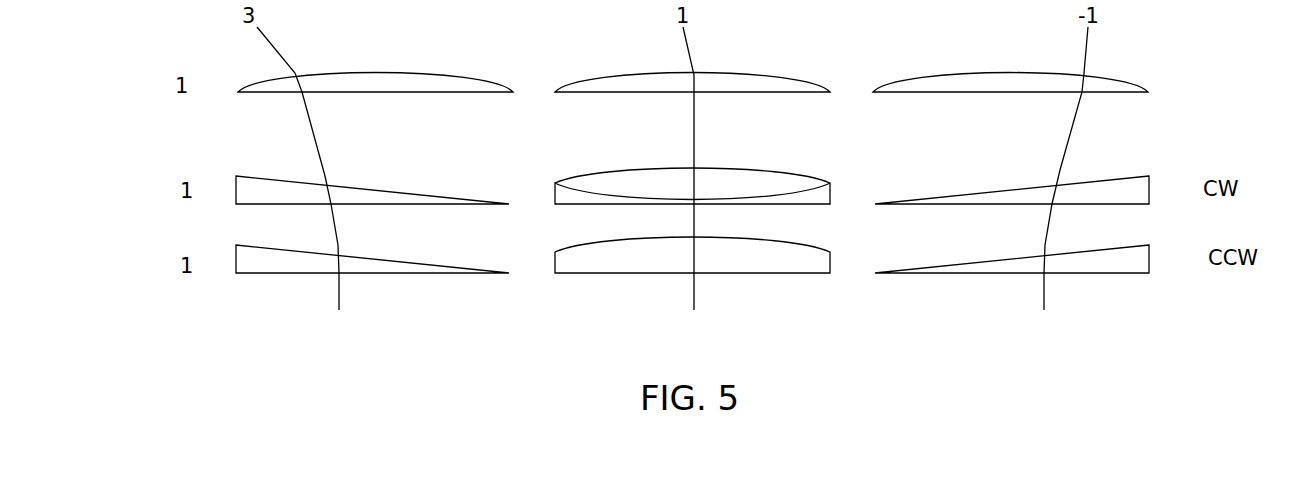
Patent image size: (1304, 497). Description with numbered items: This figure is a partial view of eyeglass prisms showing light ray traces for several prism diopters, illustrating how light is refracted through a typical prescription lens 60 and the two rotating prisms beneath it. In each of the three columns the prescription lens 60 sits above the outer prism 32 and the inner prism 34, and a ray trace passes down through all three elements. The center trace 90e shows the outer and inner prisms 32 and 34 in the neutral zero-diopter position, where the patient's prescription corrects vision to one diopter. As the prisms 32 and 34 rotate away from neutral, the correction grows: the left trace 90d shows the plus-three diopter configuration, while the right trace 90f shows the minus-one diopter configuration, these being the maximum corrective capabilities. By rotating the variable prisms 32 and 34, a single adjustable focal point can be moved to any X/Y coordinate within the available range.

The prescription lens 60 is at (385, 73).
The outer prism 32 is at (375, 190).
The inner prism 34 is at (265, 273).
The left trace 90d is at (340, 290).
The center trace 90e is at (697, 293).
The right trace 90f is at (1045, 298).